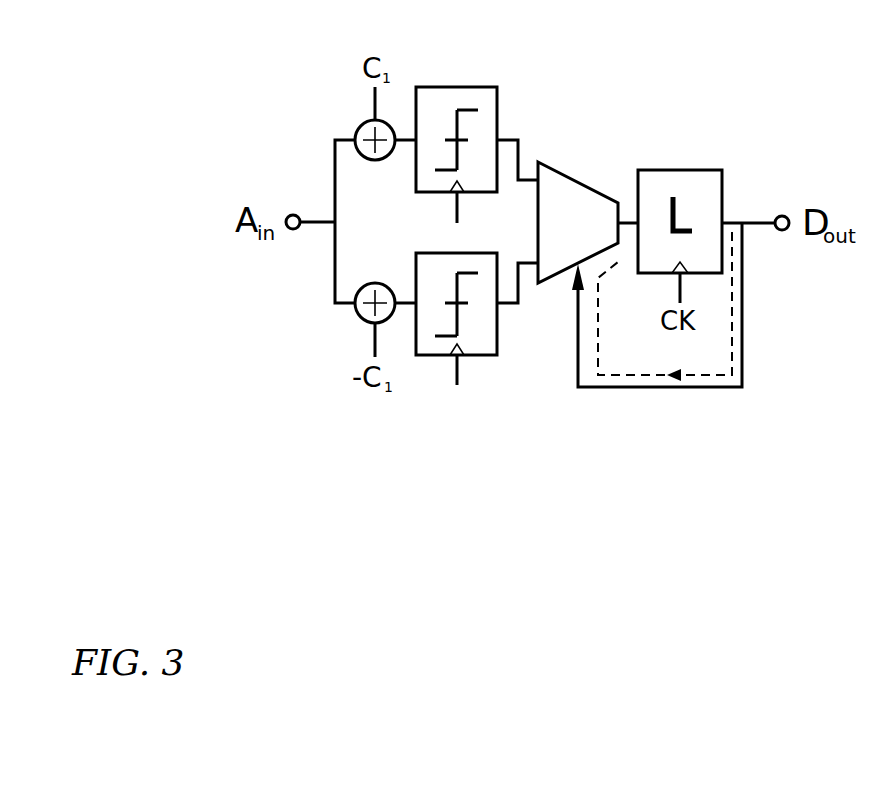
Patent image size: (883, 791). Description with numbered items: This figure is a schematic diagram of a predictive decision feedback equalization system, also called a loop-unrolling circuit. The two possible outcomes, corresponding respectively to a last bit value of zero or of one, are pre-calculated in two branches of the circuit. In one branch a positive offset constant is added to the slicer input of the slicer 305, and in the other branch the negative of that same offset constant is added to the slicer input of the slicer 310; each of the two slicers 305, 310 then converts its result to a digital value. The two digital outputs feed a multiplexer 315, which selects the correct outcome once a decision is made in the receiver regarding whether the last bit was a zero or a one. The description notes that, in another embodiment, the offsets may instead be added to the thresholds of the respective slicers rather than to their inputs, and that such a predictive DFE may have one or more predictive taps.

The slicer 305 is at (457, 87).
The slicer 310 is at (434, 355).
The multiplexer 315 is at (578, 178).